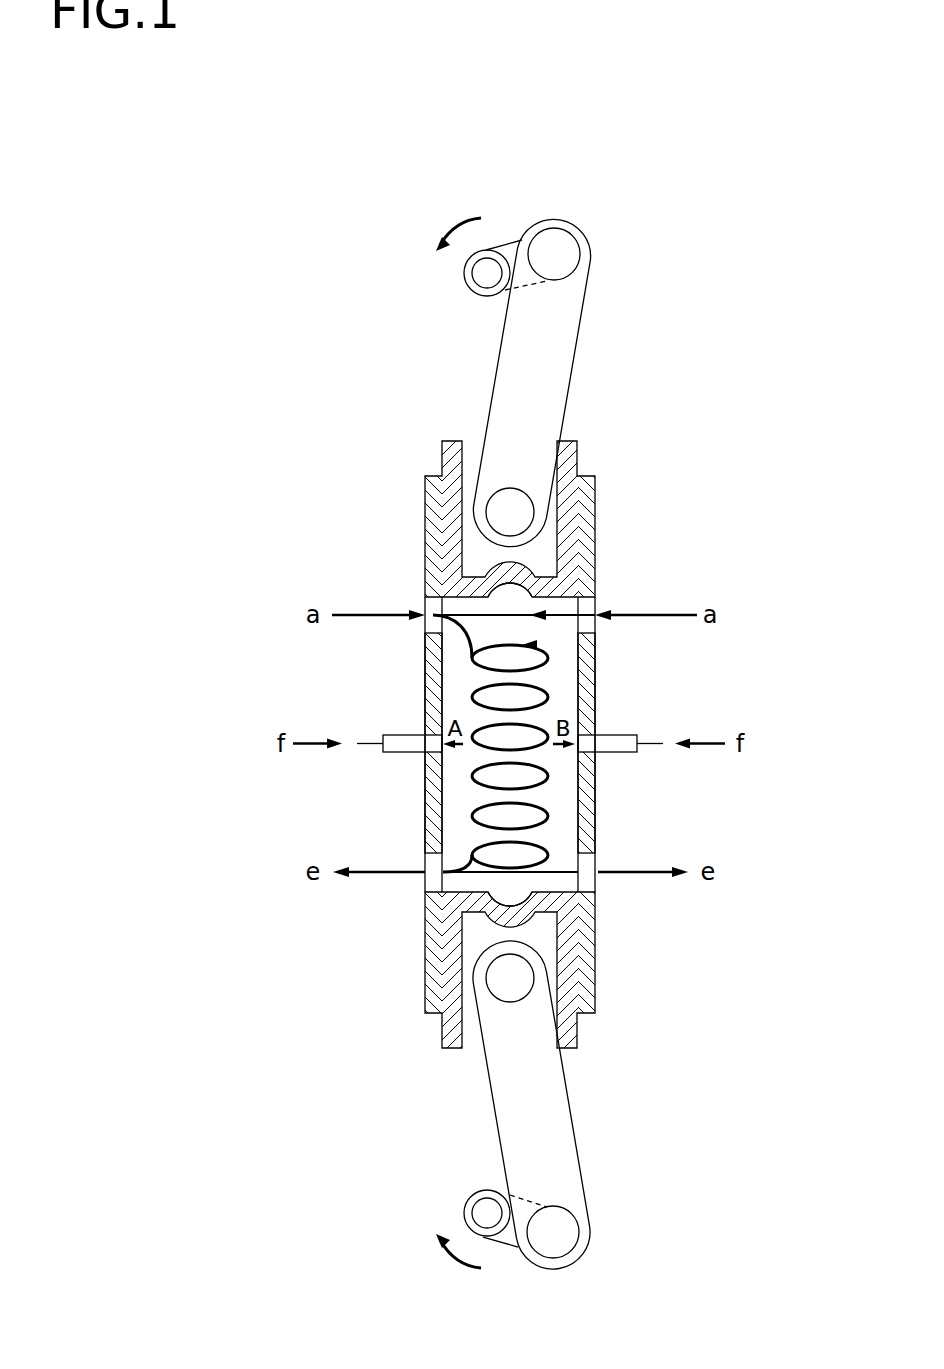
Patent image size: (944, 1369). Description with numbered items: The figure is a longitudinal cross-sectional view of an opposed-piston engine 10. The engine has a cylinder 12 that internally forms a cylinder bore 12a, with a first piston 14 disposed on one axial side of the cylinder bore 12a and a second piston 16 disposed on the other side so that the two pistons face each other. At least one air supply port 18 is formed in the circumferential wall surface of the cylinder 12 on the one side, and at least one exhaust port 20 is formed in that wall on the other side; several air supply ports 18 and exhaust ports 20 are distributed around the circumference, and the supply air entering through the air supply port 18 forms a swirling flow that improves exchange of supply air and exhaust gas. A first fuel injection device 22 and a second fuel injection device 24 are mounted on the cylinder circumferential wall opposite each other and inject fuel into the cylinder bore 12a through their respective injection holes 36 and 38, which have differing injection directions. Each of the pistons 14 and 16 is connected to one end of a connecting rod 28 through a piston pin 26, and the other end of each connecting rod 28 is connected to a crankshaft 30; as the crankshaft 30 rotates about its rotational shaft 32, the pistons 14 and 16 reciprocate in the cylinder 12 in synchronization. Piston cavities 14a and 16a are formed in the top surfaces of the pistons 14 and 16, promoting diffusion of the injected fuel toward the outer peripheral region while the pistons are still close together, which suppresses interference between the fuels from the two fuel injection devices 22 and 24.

The opposed-piston engine 10 is at (470, 109).
The cylinder 12 is at (423, 992).
The cylinder bore 12a is at (455, 796).
The piston 14 is at (440, 460).
The piston cavity 14a is at (478, 608).
The piston 16 is at (578, 1040).
The piston cavity 16a is at (478, 880).
The air supply port 18 is at (595, 603).
The exhaust port 20 is at (595, 880).
The fuel injection device 22 is at (413, 735).
The fuel injection device 24 is at (610, 735).
The piston pin 26 is at (512, 495).
The connecting rod 28 is at (558, 392).
The crankshaft 30 is at (507, 233).
The rotational shaft 32 is at (483, 273).
The injection hole 36 is at (433, 700).
The injection hole 38 is at (588, 705).